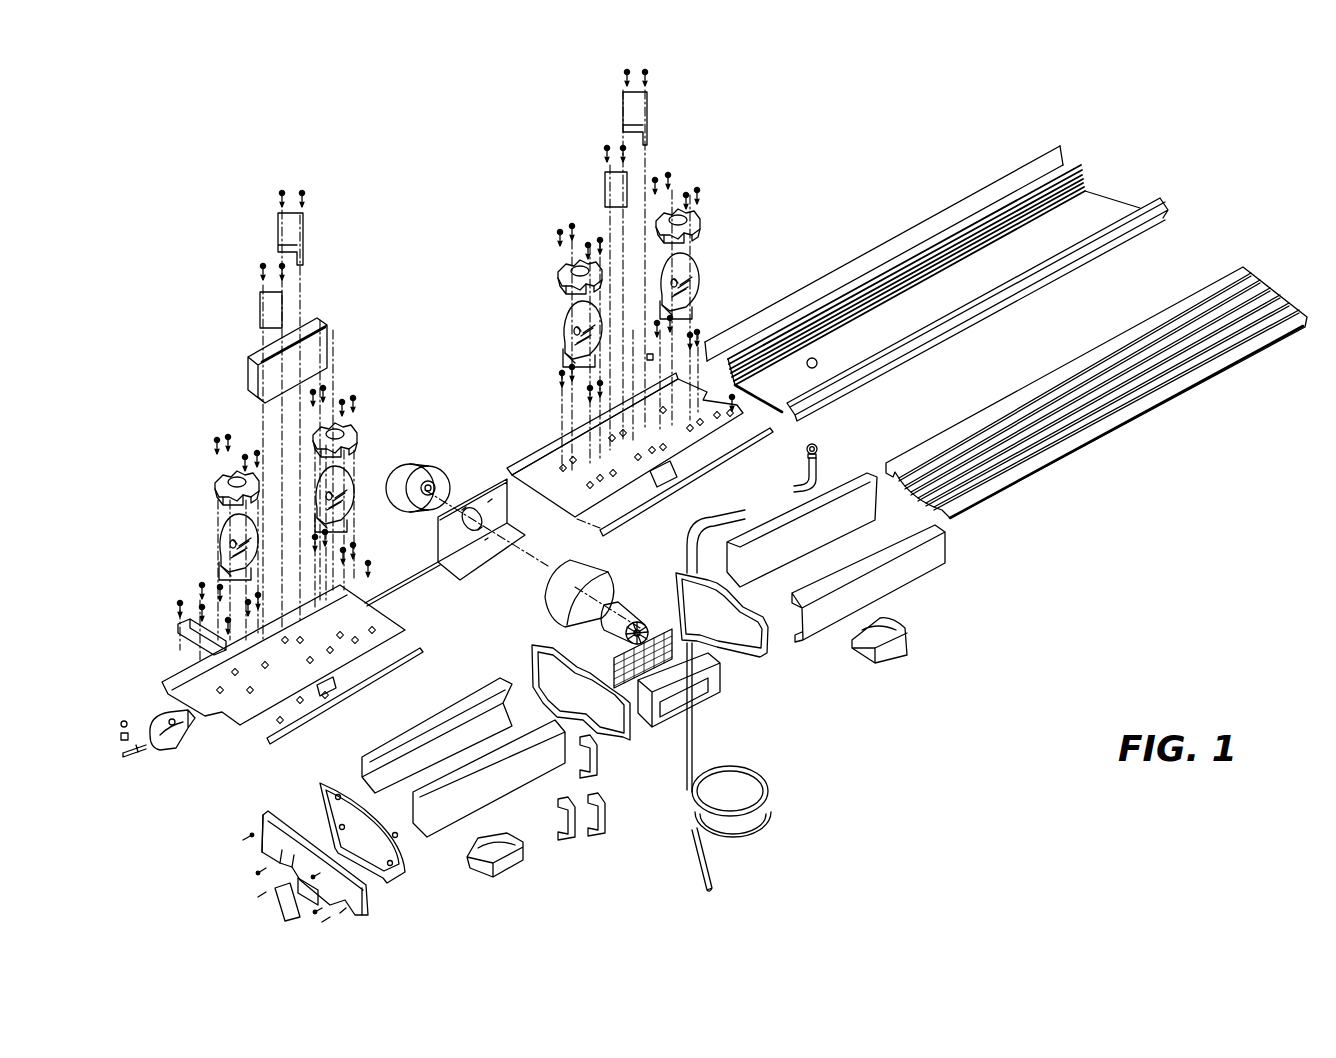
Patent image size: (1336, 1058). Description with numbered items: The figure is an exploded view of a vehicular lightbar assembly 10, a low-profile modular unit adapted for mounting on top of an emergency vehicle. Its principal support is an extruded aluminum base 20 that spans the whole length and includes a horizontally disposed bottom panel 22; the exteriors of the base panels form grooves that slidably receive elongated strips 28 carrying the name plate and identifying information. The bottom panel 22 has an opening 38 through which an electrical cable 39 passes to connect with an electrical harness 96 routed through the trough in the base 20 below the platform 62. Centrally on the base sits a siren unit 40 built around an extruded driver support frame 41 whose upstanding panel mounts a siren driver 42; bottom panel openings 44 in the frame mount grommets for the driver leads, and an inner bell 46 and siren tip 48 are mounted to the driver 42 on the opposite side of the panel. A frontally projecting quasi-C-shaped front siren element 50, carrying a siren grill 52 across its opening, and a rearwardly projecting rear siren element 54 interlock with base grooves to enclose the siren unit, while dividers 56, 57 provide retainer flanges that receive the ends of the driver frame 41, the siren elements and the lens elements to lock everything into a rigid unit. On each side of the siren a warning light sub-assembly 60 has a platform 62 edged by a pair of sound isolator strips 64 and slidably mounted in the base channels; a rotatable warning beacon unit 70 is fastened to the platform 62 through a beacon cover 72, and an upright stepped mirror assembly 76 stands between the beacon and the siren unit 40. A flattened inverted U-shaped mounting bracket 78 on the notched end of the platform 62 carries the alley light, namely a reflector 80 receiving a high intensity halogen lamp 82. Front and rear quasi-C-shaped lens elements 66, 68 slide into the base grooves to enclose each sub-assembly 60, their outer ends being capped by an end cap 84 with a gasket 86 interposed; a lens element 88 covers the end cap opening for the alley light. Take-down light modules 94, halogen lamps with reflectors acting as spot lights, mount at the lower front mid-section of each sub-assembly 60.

The vehicular lightbar assembly 10 is at (1074, 531).
The extruded aluminum base 20 is at (970, 283).
The bottom panel 22 is at (1095, 200).
The elongated strips 28 is at (863, 260).
The opening 38 is at (812, 358).
The electrical cable 39 is at (820, 462).
The siren unit 40 is at (425, 458).
The driver support frame 41 is at (483, 553).
The siren driver 42 is at (414, 473).
The bottom panel openings 44 is at (442, 548).
The inner bell 46 is at (590, 573).
The siren tip 48 is at (630, 613).
The front siren element 50 is at (715, 686).
The siren grill 52 is at (727, 647).
The rear siren element 54 is at (318, 320).
The divider 56 is at (614, 725).
The divider 57 is at (772, 647).
The warning light sub-assembly 60 is at (148, 650).
The platform 62 is at (253, 708).
The sound isolator strips 64 is at (537, 447).
The front lens element 66 is at (923, 577).
The rear lens element 68 is at (870, 517).
The rotatable warning beacon unit 70 is at (305, 483).
The beacon cover 72 is at (215, 482).
The upright stepped mirror assembly 76 is at (297, 230).
The mounting bracket 78 is at (178, 625).
The reflector 80 is at (168, 712).
The high intensity halogen lamp 82 is at (118, 745).
The end cap 84 is at (355, 897).
The gasket 86 is at (405, 866).
The lens element 88 is at (285, 910).
The take-down light module 94 is at (890, 650).
The electrical harness 96 is at (420, 578).